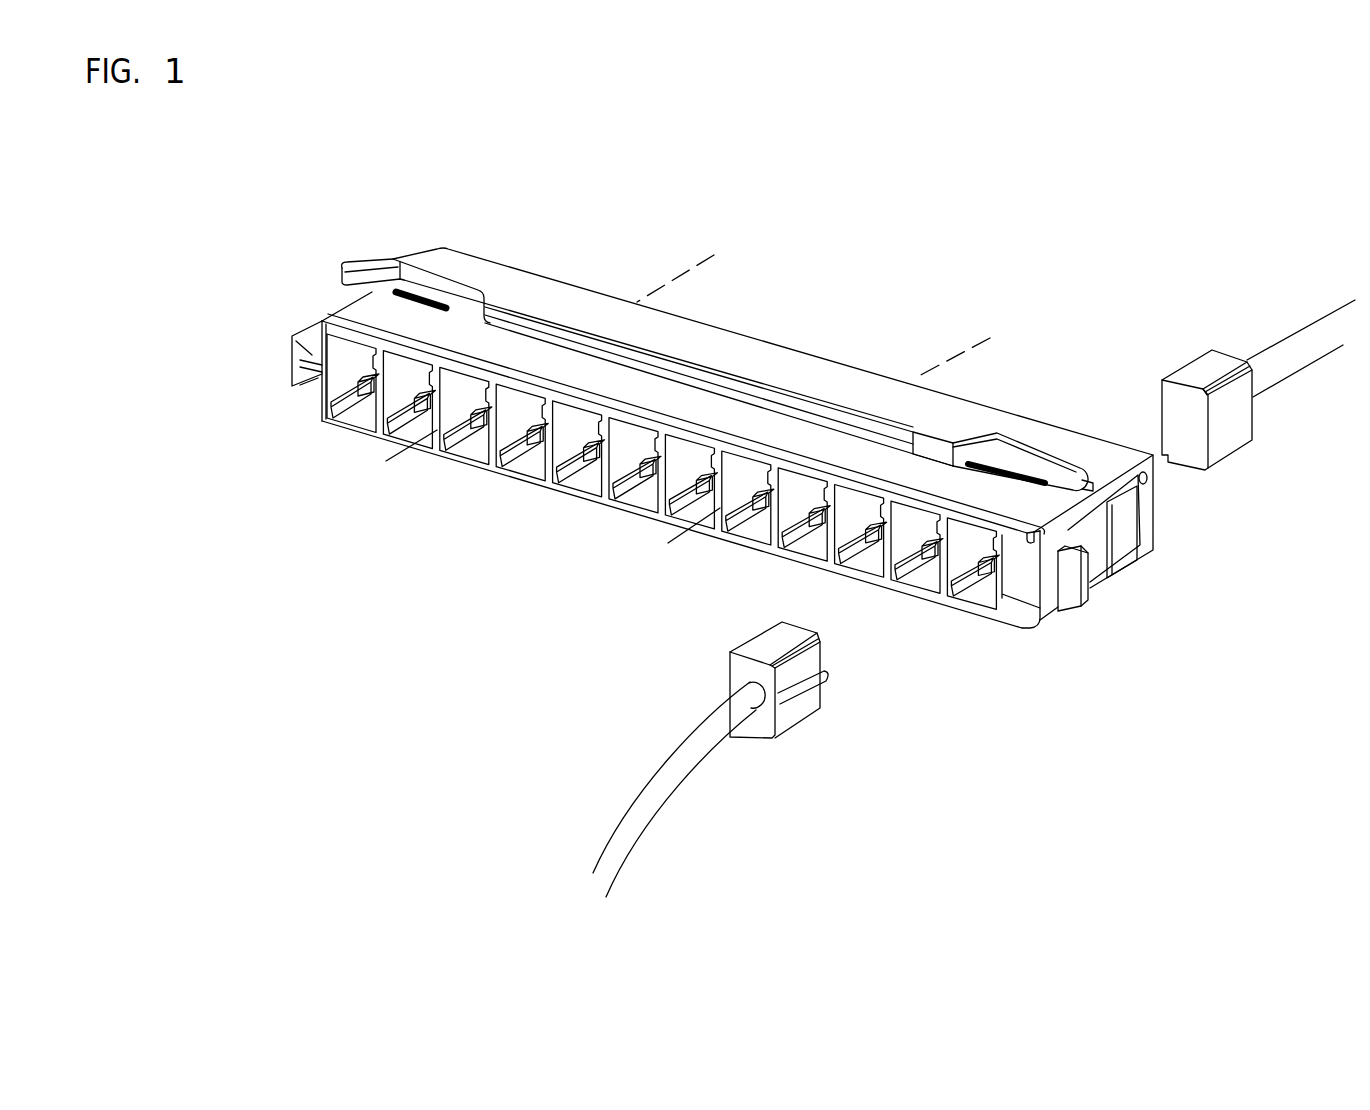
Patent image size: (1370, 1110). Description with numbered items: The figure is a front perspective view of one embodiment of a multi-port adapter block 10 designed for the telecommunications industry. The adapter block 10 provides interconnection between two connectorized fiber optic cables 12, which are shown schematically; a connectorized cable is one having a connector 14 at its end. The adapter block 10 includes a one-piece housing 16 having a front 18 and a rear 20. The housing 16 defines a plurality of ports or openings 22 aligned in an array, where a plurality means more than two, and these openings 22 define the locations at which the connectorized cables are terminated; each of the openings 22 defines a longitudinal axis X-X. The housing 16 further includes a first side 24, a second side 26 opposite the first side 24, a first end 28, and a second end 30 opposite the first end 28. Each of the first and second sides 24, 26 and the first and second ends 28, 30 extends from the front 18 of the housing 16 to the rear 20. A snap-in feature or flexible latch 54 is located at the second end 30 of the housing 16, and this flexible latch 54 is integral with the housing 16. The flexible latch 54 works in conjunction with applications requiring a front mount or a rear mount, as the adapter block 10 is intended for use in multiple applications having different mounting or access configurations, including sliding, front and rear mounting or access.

The multi-port adapter block 10 is at (1220, 489).
The connectorized fiber optic cable 12 is at (1224, 312).
The connector 14 is at (1198, 372).
The one-piece housing 16 is at (867, 383).
The front 18 is at (722, 603).
The rear 20 is at (770, 269).
The ports or openings 22 is at (627, 481).
The first side 24 is at (528, 283).
The second side 26 is at (980, 600).
The first end 28 is at (328, 315).
The second end 30 is at (1050, 517).
The flexible latch 54 is at (1085, 583).